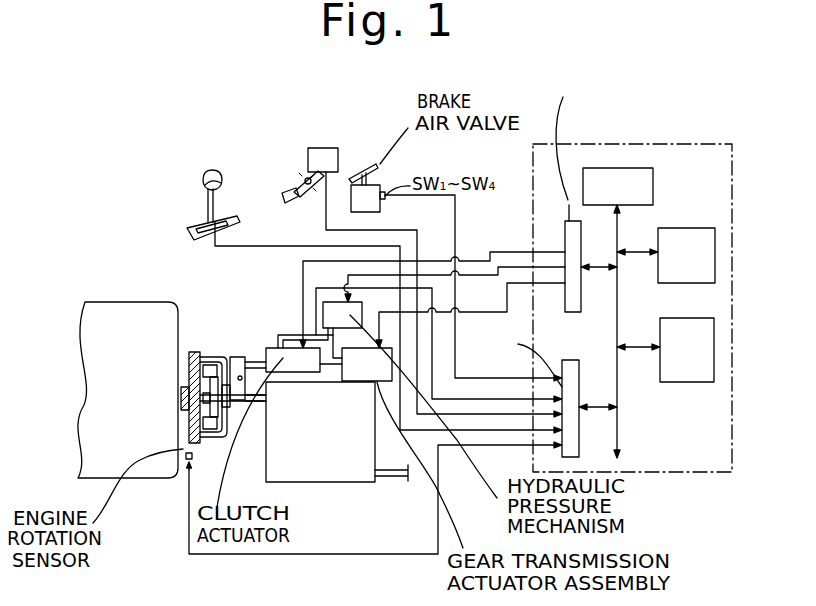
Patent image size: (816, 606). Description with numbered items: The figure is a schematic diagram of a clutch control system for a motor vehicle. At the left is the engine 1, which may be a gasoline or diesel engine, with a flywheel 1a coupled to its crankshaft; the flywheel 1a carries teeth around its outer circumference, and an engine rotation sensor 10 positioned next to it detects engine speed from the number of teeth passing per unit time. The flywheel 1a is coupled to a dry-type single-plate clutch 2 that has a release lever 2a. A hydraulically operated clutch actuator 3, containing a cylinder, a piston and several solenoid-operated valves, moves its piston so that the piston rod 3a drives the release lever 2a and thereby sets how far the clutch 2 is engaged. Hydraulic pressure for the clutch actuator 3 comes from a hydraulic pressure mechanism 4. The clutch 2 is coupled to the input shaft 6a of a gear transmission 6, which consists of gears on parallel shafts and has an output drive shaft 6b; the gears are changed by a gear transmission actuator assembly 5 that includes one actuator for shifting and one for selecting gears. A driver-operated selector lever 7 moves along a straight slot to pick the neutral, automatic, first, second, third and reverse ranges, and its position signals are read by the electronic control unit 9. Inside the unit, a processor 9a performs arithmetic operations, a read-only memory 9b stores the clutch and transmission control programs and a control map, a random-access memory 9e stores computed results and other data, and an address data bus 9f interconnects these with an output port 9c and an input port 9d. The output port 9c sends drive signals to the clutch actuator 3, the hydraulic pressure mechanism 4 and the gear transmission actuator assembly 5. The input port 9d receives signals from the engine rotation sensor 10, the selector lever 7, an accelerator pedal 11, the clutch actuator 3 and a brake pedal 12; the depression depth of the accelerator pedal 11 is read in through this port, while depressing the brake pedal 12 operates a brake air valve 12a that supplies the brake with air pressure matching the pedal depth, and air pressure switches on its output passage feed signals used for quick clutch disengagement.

The engine 1 is at (169, 301).
The flywheel 1a is at (192, 349).
The clutch 2 is at (217, 348).
The release lever 2a is at (239, 352).
The clutch actuator 3 is at (289, 340).
The piston rod 3a is at (255, 350).
The hydraulic pressure mechanism 4 is at (363, 310).
The gear transmission actuator assembly 5 is at (392, 348).
The gear transmission 6 is at (325, 474).
The input shaft 6a is at (248, 406).
The output shaft 6b is at (385, 479).
The selector lever 7 is at (224, 207).
The electronic control unit 9 is at (713, 147).
The processor 9a is at (653, 190).
The read-only memory 9b is at (685, 228).
The output port 9c is at (572, 312).
The input port 9d is at (574, 388).
The random-access memory 9e is at (680, 382).
The address data bus 9f is at (621, 448).
The engine rotation sensor 10 is at (186, 467).
The accelerator pedal 11 is at (290, 194).
The brake pedal 12 is at (373, 162).
The brake air valve 12a is at (379, 212).